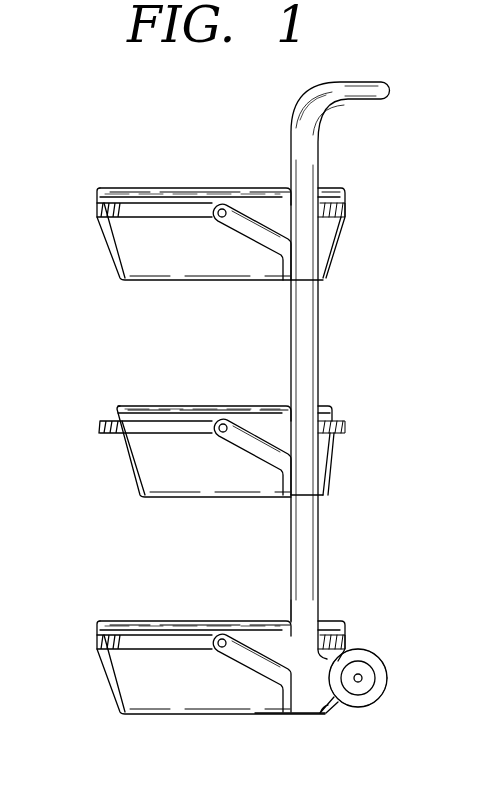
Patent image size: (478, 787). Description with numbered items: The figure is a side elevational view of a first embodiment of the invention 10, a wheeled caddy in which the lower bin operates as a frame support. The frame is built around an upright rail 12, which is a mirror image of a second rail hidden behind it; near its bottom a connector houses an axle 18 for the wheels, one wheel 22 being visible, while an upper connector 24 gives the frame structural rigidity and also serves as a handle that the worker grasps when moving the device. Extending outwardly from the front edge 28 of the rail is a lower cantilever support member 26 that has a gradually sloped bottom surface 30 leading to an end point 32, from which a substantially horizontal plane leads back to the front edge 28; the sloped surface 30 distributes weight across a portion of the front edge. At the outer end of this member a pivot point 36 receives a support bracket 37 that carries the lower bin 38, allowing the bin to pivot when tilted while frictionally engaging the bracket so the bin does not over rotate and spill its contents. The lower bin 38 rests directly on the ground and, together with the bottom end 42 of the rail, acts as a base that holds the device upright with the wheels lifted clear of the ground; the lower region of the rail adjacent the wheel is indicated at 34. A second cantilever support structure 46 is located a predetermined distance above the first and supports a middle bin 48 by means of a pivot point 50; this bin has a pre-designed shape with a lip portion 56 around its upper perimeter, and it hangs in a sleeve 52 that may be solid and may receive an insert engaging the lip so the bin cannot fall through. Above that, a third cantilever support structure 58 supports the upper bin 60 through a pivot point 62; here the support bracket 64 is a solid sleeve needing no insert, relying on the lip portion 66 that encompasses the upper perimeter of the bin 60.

The utility cart 10 is at (386, 455).
The upright rail 12 is at (320, 310).
The axle 18 is at (361, 678).
The wheel 22 is at (403, 689).
The upper connector 24 is at (389, 90).
The lower cantilever support member 26 is at (267, 645).
The front edge 28 is at (268, 714).
The sloped bottom surface 30 is at (265, 668).
The end point 32 is at (212, 655).
The frame lower portion 34 is at (280, 620).
The pivot point 36 is at (214, 638).
The support bracket 37 is at (100, 625).
The lower bin 38 is at (148, 688).
The bottom end 42 is at (322, 714).
The second cantilever support structure 46 is at (267, 430).
The bin 48 is at (148, 468).
The pivot point 50 is at (223, 438).
The sleeve 52 is at (100, 424).
The lip portion 56 is at (118, 405).
The third cantilever support structure 58 is at (263, 212).
The bin 60 is at (140, 246).
The pivot point 62 is at (222, 223).
The support bracket 64 is at (100, 191).
The lip portion 66 is at (100, 186).